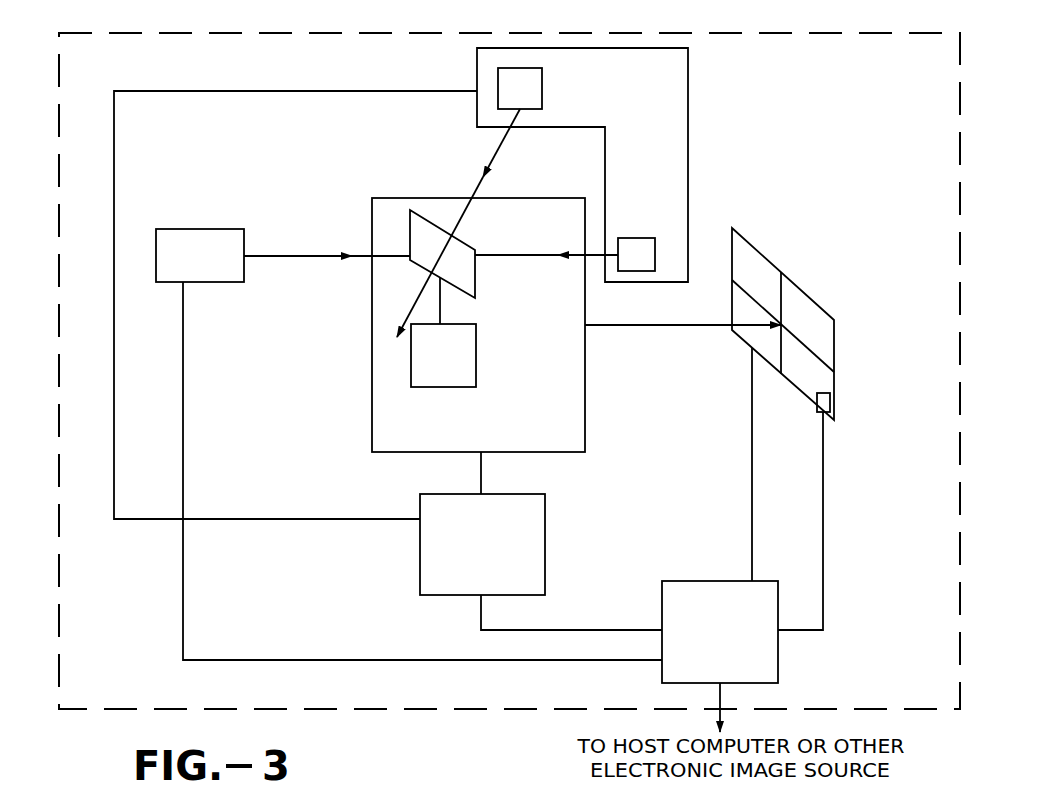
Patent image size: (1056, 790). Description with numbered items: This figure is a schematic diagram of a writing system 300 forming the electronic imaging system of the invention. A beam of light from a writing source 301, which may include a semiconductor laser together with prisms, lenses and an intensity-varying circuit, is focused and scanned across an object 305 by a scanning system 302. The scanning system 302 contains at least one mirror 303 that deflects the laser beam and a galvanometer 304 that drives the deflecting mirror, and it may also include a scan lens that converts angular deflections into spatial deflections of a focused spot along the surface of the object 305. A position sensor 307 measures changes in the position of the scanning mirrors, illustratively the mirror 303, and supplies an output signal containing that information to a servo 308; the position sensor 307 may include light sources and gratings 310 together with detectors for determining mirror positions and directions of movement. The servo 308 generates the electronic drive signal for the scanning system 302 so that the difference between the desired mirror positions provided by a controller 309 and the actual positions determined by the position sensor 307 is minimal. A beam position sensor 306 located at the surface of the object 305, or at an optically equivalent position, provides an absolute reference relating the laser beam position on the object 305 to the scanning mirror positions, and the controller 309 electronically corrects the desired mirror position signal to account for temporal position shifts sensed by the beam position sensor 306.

The optical scanning system 300 is at (960, 520).
The writing source 301 is at (210, 235).
The scanning system 302 is at (372, 422).
The mirror 303 is at (475, 270).
The galvanometer 304 is at (476, 335).
The object 305 is at (766, 258).
The beam position sensor 306 is at (832, 400).
The position sensor 307 is at (688, 66).
The servo 308 is at (420, 565).
The controller 309 is at (778, 651).
The light sources and gratings 310 is at (633, 238).